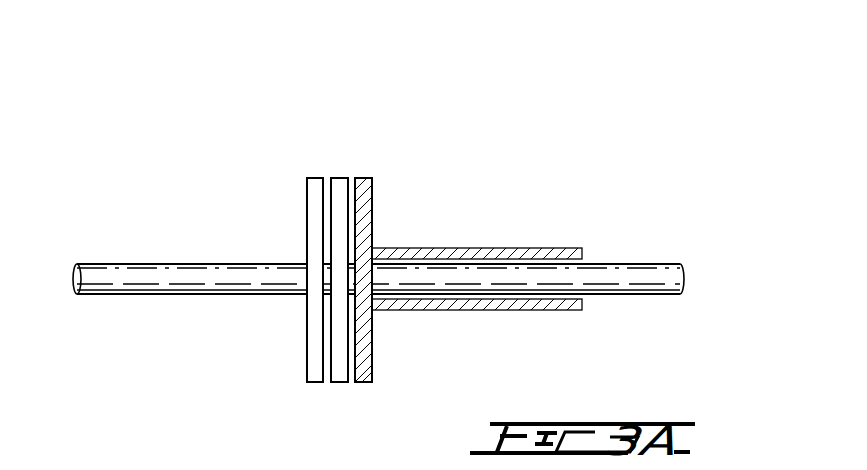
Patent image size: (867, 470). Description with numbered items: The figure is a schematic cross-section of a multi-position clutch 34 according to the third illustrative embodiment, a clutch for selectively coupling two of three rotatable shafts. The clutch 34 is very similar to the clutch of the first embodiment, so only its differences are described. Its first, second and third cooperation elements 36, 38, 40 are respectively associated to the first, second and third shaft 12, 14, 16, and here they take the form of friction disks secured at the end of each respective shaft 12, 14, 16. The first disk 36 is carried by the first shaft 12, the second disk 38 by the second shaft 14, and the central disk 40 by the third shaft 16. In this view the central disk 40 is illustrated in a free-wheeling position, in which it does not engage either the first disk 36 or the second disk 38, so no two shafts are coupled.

The first shaft 12 is at (124, 273).
The second shaft 14 is at (457, 247).
The third shaft 16 is at (636, 278).
The multi-position clutch 34 is at (212, 134).
The first cooperation element 36 is at (314, 182).
The second cooperation element 38 is at (366, 185).
The third cooperation element 40 is at (340, 188).